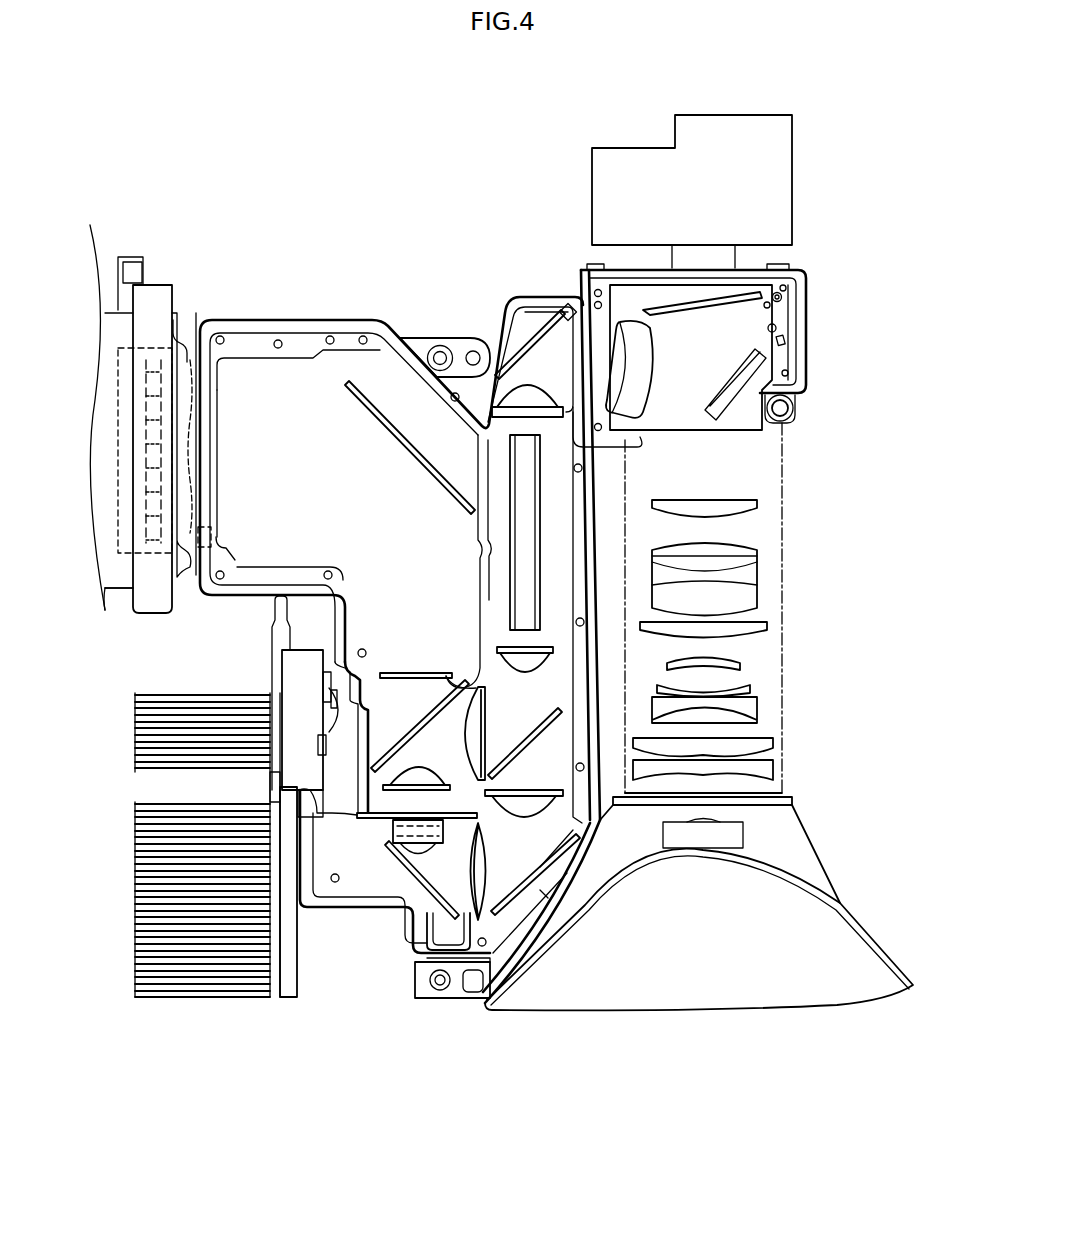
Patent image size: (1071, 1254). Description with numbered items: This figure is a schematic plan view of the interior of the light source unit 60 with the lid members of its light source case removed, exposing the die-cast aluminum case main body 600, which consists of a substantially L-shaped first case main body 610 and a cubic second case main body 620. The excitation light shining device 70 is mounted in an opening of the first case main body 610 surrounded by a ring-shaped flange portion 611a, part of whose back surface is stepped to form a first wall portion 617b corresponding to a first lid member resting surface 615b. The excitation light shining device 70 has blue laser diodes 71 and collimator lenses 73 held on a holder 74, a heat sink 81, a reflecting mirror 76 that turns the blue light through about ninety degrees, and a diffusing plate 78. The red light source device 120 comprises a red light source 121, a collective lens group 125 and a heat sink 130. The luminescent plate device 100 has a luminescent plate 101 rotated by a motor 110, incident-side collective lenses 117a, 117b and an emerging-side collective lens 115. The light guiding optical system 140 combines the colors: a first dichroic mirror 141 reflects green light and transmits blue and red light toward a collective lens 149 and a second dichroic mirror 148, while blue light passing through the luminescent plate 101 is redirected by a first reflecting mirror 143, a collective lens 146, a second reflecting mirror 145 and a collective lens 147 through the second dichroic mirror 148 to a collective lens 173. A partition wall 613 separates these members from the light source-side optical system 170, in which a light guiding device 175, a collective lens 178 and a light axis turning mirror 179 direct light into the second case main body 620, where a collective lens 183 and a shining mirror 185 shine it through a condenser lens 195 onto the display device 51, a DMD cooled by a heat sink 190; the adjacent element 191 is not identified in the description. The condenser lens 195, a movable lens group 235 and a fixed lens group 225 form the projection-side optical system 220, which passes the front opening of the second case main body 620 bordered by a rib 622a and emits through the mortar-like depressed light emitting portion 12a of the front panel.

The light source unit 60 is at (418, 197).
The excitation light shining device 70 is at (144, 298).
The flange portion 611a is at (160, 300).
The first wall portion 617b is at (193, 360).
The first lid member resting surface 615b is at (213, 393).
The case main body 600 is at (305, 317).
The first case main body 610 is at (350, 317).
The collimator lenses 73 is at (200, 532).
The blue laser diodes 71 is at (160, 547).
The holder 74 is at (150, 553).
The heat sink 81 is at (122, 597).
The reflecting mirror 76 is at (368, 395).
The partition wall 613 is at (484, 483).
The light axis turning mirror 179 is at (497, 345).
The collective lens 178 is at (500, 420).
The light source-side optical system 170 is at (553, 365).
The light guiding device 175 is at (514, 562).
The collective lens 173 is at (503, 648).
The collective lens 117a is at (381, 672).
The diffusing plate 78 is at (393, 673).
The light guiding optical system 140 is at (495, 681).
The collective lens 117b is at (422, 768).
The first dichroic mirror 141 is at (413, 737).
The collective lens 149 is at (485, 733).
The second dichroic mirror 148 is at (560, 712).
The collective lens 147 is at (525, 790).
The second reflecting mirror 145 is at (537, 875).
The collective lens 146 is at (473, 923).
The first reflecting mirror 143 is at (417, 923).
The collective lens 115 is at (392, 830).
The luminescent plate 101 is at (383, 815).
The motor 110 is at (403, 840).
The luminescent plate device 100 is at (367, 837).
The heat sink 130 is at (244, 998).
The red light source device 120 is at (297, 771).
The red light source 121 is at (327, 735).
The collective lens group 125 is at (335, 700).
The heat sink 190 is at (780, 172).
The connector 191 is at (780, 208).
The second case main body 620 is at (810, 274).
The display device 51 is at (780, 299).
The condenser lens 195 is at (775, 329).
The shining mirror 185 is at (793, 408).
The rib 622a is at (770, 442).
The collective lens 183 is at (632, 422).
The movable lens group 235 is at (749, 532).
The projection-side optical system 220 is at (782, 623).
The fixed lens group 225 is at (769, 717).
The light emitting portion 12a is at (673, 979).